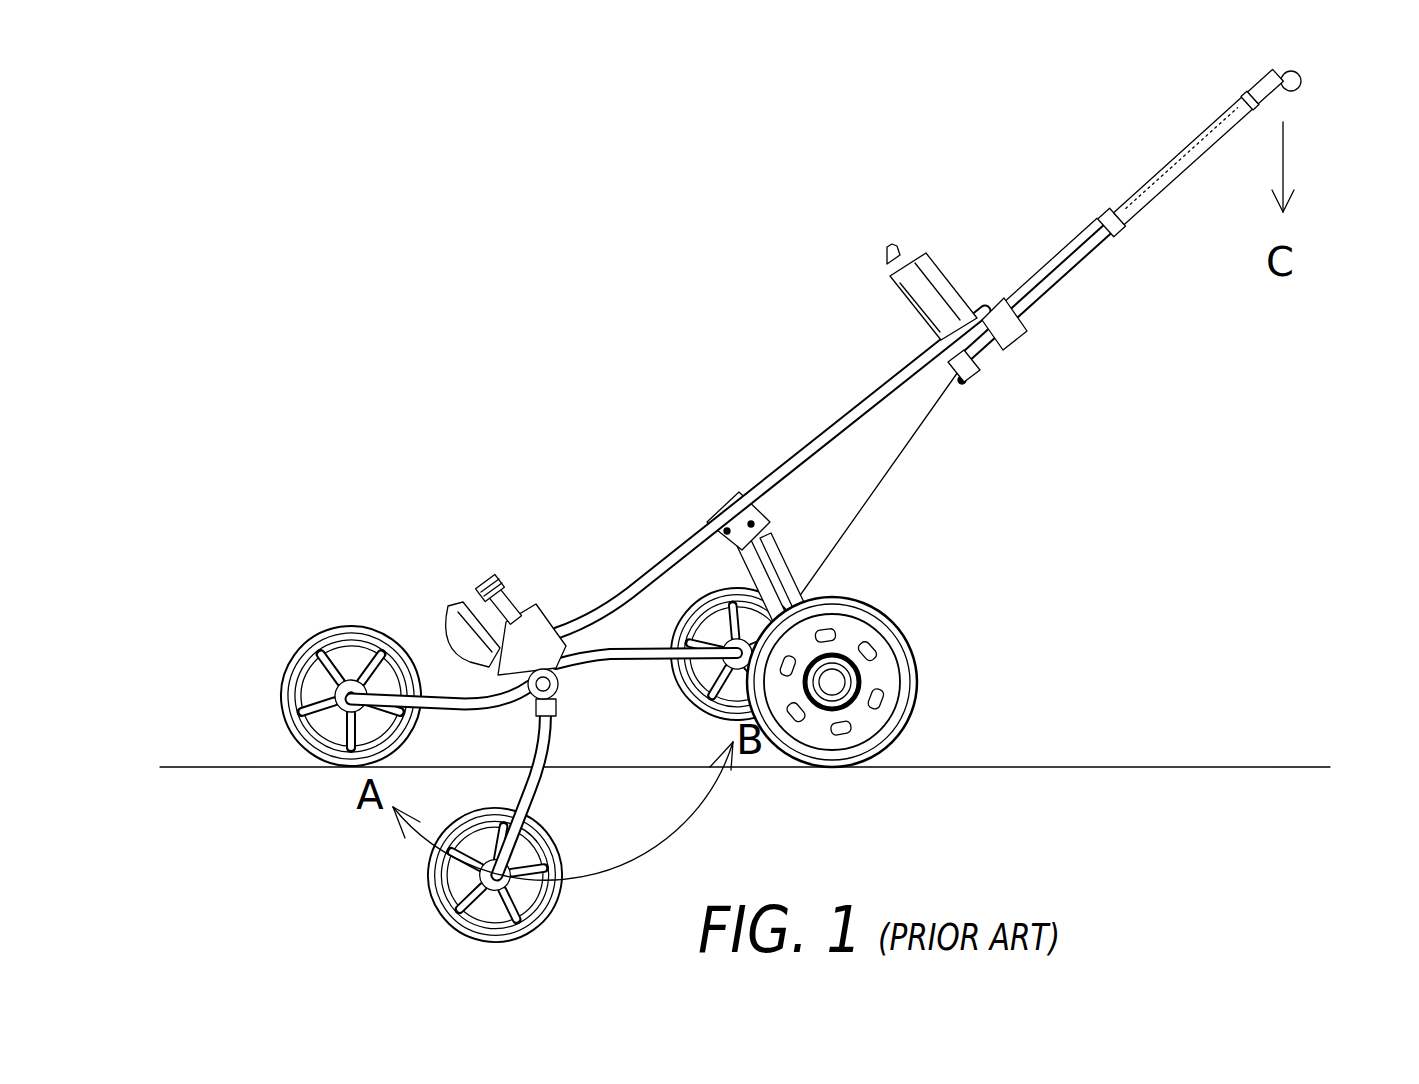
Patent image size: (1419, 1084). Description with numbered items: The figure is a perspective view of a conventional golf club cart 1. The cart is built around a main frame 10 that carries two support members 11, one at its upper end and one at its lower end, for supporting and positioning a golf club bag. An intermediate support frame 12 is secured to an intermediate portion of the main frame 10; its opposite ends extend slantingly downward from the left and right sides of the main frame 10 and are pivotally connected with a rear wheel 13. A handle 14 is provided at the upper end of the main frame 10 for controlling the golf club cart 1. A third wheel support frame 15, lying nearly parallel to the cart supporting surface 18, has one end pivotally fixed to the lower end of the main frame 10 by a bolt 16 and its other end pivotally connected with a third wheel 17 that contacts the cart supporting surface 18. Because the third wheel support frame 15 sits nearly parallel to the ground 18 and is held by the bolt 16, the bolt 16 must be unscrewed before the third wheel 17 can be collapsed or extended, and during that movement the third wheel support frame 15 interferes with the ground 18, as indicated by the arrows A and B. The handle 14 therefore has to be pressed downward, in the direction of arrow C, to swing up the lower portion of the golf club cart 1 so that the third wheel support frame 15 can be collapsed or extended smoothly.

The golf club cart 1 is at (978, 450).
The main frame 10 is at (822, 443).
The support member 11 is at (888, 250).
The intermediate support frame 12 is at (740, 568).
The rear wheel 13 is at (905, 672).
The handle 14 is at (1300, 88).
The third wheel support frame 15 is at (449, 690).
The bolt 16 is at (560, 690).
The third wheel 17 is at (312, 660).
The cart supporting surface 18 is at (215, 767).